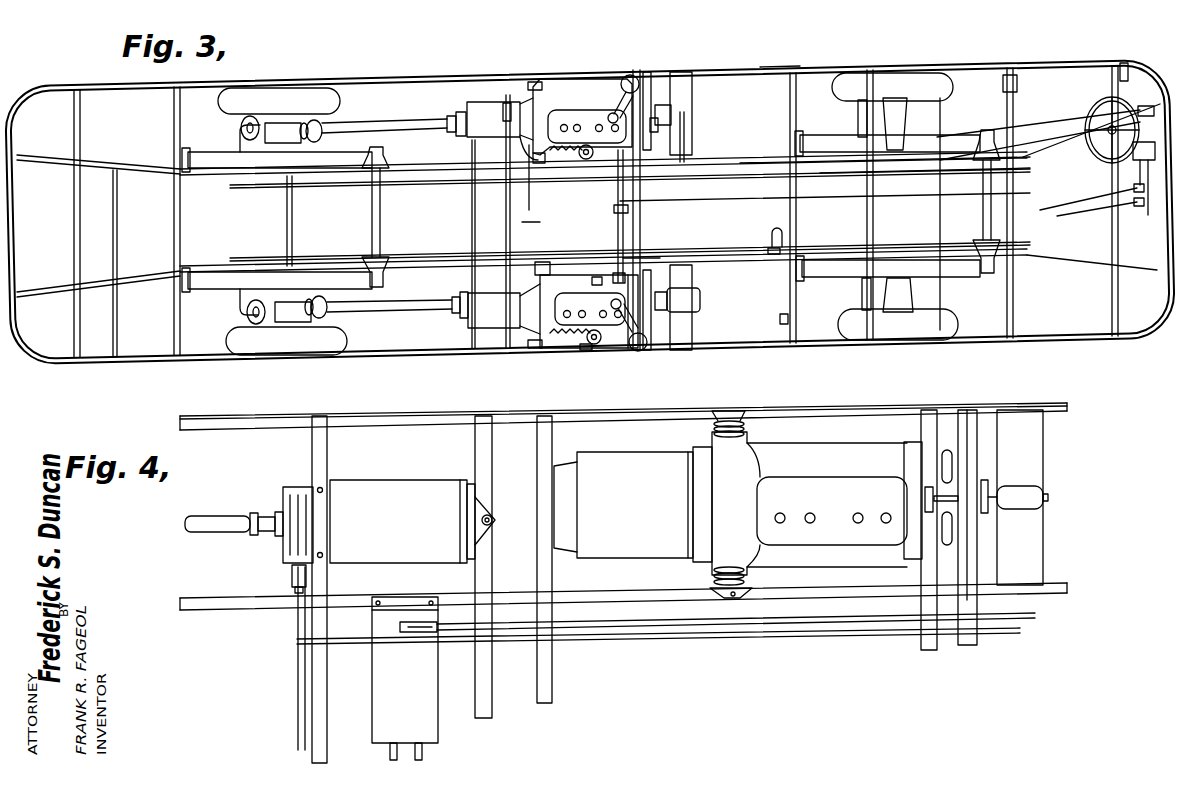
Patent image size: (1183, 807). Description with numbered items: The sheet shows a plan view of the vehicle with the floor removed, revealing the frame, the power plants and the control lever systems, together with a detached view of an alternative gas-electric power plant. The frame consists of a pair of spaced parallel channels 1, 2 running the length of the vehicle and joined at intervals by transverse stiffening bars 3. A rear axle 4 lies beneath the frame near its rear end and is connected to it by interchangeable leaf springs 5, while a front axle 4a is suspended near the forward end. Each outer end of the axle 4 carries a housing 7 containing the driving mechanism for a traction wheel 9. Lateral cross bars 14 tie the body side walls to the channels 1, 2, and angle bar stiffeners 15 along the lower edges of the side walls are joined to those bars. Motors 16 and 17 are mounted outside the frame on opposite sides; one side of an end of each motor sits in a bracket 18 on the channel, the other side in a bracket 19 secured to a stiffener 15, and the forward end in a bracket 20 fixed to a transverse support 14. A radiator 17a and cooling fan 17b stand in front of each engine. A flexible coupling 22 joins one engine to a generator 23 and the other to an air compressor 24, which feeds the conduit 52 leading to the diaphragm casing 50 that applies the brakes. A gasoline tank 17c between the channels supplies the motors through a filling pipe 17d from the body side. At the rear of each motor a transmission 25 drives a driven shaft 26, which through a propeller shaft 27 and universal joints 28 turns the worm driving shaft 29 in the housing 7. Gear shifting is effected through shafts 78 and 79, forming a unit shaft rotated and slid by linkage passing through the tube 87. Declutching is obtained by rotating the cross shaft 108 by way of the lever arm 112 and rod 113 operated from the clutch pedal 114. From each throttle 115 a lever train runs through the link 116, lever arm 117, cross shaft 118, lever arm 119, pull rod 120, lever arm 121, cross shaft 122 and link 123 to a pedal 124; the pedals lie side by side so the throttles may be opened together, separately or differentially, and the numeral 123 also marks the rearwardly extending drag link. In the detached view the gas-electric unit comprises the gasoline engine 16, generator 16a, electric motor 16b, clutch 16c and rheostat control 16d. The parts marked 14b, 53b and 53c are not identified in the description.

In FIG. 3, the channel 1 is at (102, 156).
In FIG. 4, the channel 1 is at (272, 604).
In FIG. 3, the channel 2 is at (340, 262).
In FIG. 3, the transverse stiffening bars 3 is at (118, 224).
In FIG. 3, the axle 4 is at (286, 222).
In FIG. 3, the front axle 4a is at (875, 238).
In FIG. 3, the interchangeable leaf springs 5 is at (200, 158).
In FIG. 3, the housing 7 is at (265, 128).
In FIG. 3, the traction wheel 9 is at (293, 88).
In FIG. 3, the lateral cross bars 14 is at (398, 218).
In FIG. 4, the lateral cross bars 14 is at (920, 426).
In FIG. 3, the body frame rail 14b is at (84, 110).
In FIG. 4, the body frame rail 14b is at (1044, 449).
In FIG. 3, the angle bar stiffeners 15 is at (780, 68).
In FIG. 4, the angle bar stiffeners 15 is at (842, 407).
In FIG. 3, the motor 16 is at (550, 105).
In FIG. 4, the motor 16 is at (800, 545).
In FIG. 4, the generator 16a is at (641, 452).
In FIG. 4, the electric motor 16b is at (392, 480).
In FIG. 4, the clutch 16c is at (292, 487).
In FIG. 4, the rheostat control 16d is at (428, 720).
In FIG. 3, the motor 17 is at (548, 350).
In FIG. 3, the radiator 17a is at (680, 72).
In FIG. 4, the radiator 17a is at (964, 428).
In FIG. 3, the cooling fan 17b is at (648, 72).
In FIG. 4, the cooling fan 17b is at (947, 450).
In FIG. 3, the gasoline tank 17c is at (775, 252).
In FIG. 3, the filling pipe 17d is at (780, 320).
In FIG. 3, the bracket 18 is at (541, 170).
In FIG. 4, the bracket 18 is at (738, 592).
In FIG. 3, the bracket 19 is at (534, 82).
In FIG. 4, the bracket 19 is at (740, 413).
In FIG. 3, the bracket 20 is at (630, 75).
In FIG. 3, the flexible coupling 22 is at (660, 125).
In FIG. 4, the flexible coupling 22 is at (990, 515).
In FIG. 3, the generator 23 is at (701, 301).
In FIG. 3, the air compressor 24 is at (672, 113).
In FIG. 4, the air compressor 24 is at (1035, 505).
In FIG. 3, the transmission 25 is at (488, 100).
In FIG. 3, the driven shaft 26 is at (458, 318).
In FIG. 3, the propeller shaft 27 is at (415, 119).
In FIG. 3, the universal joints 28 is at (322, 122).
In FIG. 3, the worm driving shaft 29 is at (320, 140).
In FIG. 3, the diaphragm casing 50 is at (240, 124).
In FIG. 3, the conduit 52 is at (243, 260).
In FIG. 3, the spring 53b is at (605, 75).
In FIG. 3, the spring seat 53c is at (610, 356).
In FIG. 3, the shafts 78 is at (500, 112).
In FIG. 3, the shaft 79 is at (476, 240).
In FIG. 3, the tube 87 is at (752, 162).
In FIG. 3, the cross shaft 108 is at (544, 185).
In FIG. 3, the lever arm 112 is at (505, 205).
In FIG. 3, the rod 113 is at (833, 176).
In FIG. 3, the clutch pedal 114 is at (1124, 63).
In FIG. 3, the throttles 115 is at (585, 160).
In FIG. 3, the link 116 is at (597, 276).
In FIG. 3, the lever arm 117 is at (620, 258).
In FIG. 3, the cross shaft 118 is at (625, 243).
In FIG. 3, the lever arm 119 is at (613, 210).
In FIG. 3, the pull rod 120 is at (770, 238).
In FIG. 3, the lever arm 121 is at (1145, 216).
In FIG. 3, the cross shaft 122 is at (1130, 195).
In FIG. 3, the link 123 is at (958, 124).
In FIG. 3, the pedal 124 is at (1120, 187).